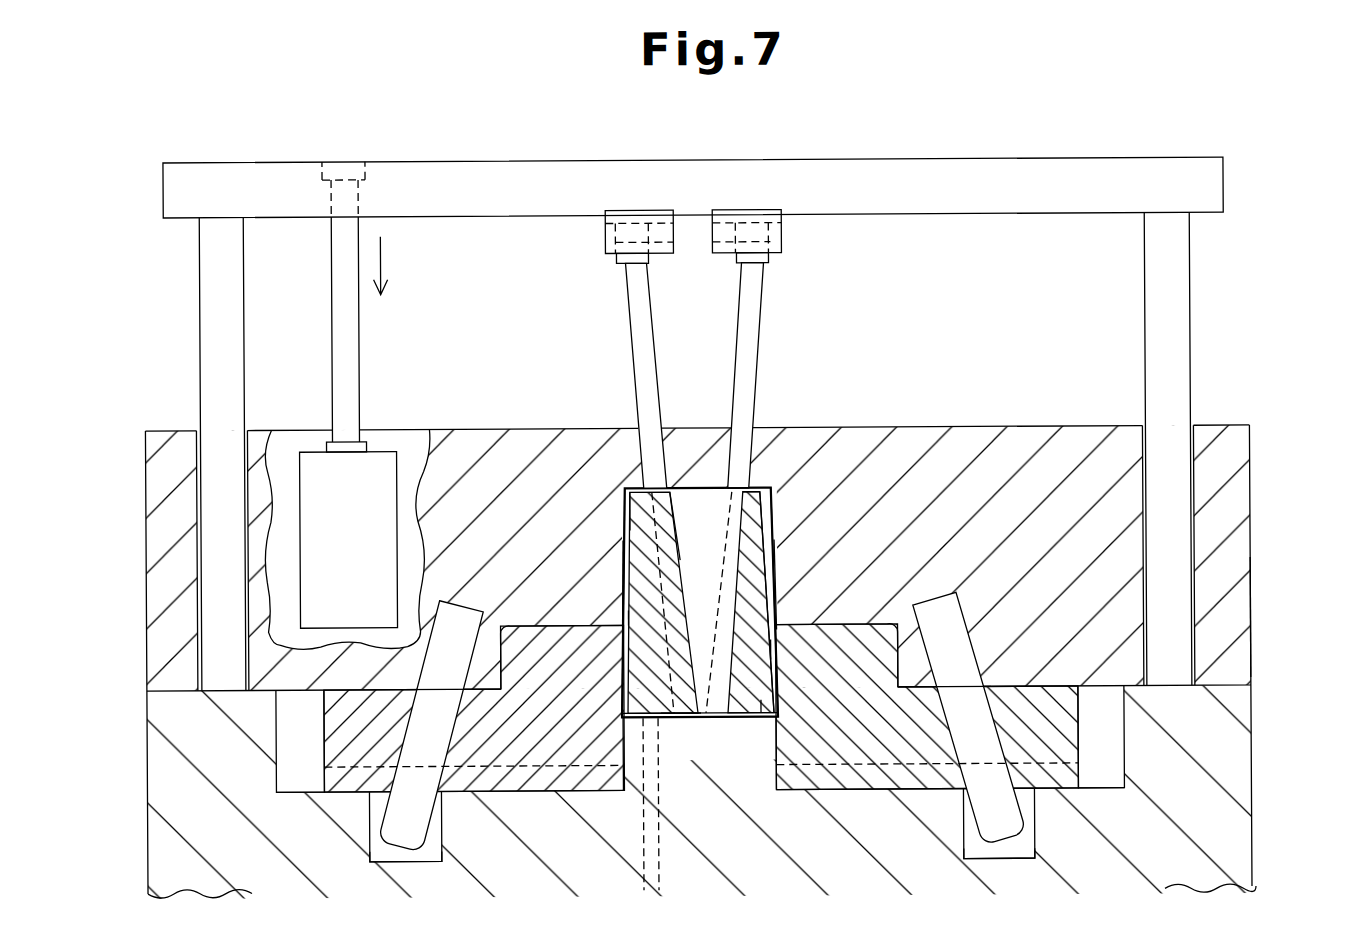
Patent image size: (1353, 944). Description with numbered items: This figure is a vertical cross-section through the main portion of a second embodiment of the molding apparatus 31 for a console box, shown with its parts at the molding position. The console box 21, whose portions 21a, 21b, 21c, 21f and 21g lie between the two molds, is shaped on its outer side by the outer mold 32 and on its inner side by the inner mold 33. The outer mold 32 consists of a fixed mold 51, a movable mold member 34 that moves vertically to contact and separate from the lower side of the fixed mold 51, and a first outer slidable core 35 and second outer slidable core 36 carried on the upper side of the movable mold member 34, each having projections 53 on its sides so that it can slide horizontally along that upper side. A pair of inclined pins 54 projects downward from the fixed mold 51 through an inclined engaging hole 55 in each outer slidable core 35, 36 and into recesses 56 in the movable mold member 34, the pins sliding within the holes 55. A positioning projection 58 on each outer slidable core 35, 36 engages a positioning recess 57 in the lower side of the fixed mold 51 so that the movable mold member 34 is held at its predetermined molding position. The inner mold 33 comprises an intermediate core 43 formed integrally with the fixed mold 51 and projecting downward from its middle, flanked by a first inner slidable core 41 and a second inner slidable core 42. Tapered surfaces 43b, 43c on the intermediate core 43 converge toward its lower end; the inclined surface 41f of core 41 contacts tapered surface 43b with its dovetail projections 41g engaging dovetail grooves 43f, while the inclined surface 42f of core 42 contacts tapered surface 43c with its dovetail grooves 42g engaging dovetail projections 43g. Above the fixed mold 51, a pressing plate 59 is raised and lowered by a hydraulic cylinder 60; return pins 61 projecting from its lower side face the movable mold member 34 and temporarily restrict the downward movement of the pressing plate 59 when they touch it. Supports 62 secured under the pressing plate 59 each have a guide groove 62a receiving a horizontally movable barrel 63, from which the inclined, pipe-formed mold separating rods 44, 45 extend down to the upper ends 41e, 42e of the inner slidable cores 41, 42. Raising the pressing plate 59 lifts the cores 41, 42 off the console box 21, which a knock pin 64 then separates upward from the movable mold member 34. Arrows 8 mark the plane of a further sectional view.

The section line 8- 8 is at (1043, 630).
The console box 21 is at (622, 520).
The sleeve bottom surface 21a is at (718, 722).
The sleeve left side surface 21b is at (618, 553).
The sleeve right side surface 21c is at (778, 560).
The sleeve left upper edge 21f is at (626, 486).
The sleeve right upper edge 21g is at (776, 515).
The molding apparatus 31 is at (1252, 414).
The outer mold 32 is at (1250, 472).
The inner mold 33 is at (612, 698).
The movable mold member 34 is at (1246, 752).
The first outer slidable core 35 is at (538, 795).
The second outer slidable core 36 is at (846, 795).
The first inner slidable core 41 is at (625, 660).
The left die half upper outer edge 41e is at (642, 482).
The inclined surface 41f is at (665, 483).
The dovetail projections 41g is at (681, 494).
The second inner slidable core 42 is at (782, 690).
The right die half top surface 42e is at (770, 488).
The inclined surface 42f is at (746, 480).
The dovetail grooves 42g is at (778, 600).
The intermediate core 43 is at (630, 602).
The tapered surface 43b is at (626, 612).
The tapered surface 43c is at (778, 653).
The dovetail grooves 43f is at (666, 720).
The dovetail projections 43g is at (775, 710).
The mold separating rod 44 is at (636, 333).
The mold separating rod 45 is at (760, 332).
The fixed mold 51 is at (1246, 616).
The projections 53 is at (345, 760).
The inclined pins 54 is at (380, 838).
The inclined engaging hole 55 is at (420, 688).
The recesses 56 is at (440, 832).
The positioning recess 57 is at (504, 622).
The positioning projection 58 is at (495, 660).
The pressing plate 59 is at (451, 170).
The hydraulic cylinder 60 is at (378, 458).
The return pins 61 is at (205, 399).
The supports 62 is at (607, 235).
The guide groove 62a is at (660, 222).
The movable barrel 63 is at (618, 262).
The knock pin 64 is at (642, 835).